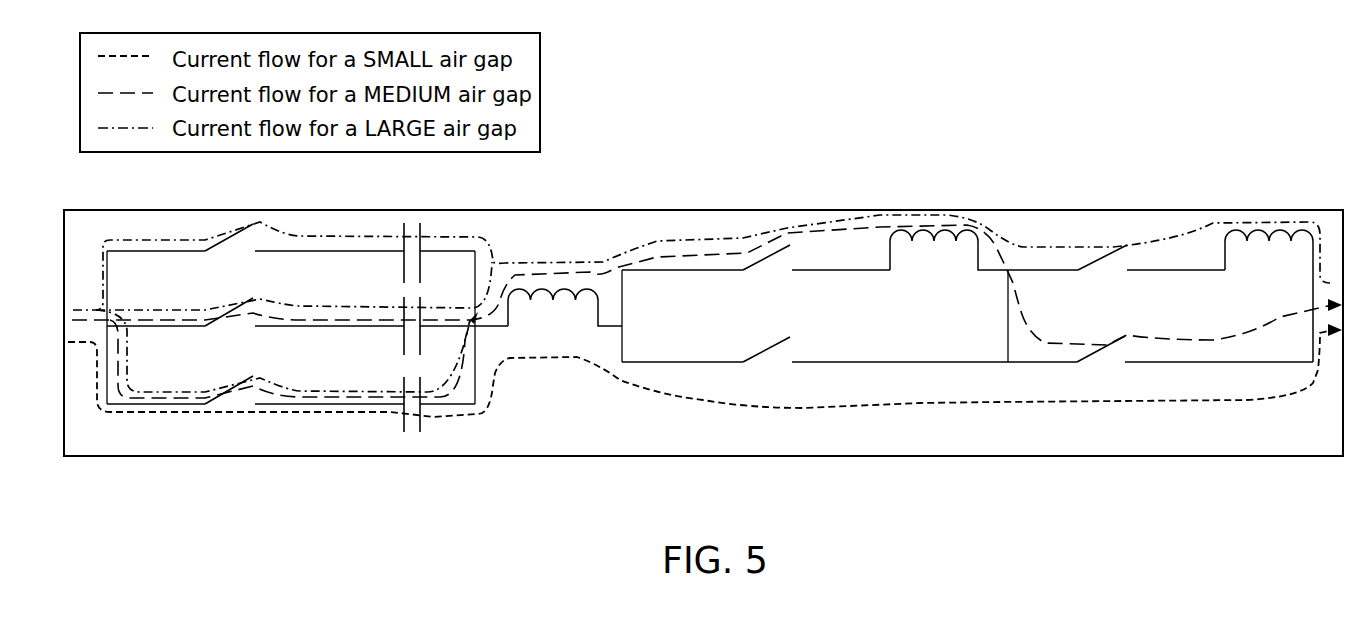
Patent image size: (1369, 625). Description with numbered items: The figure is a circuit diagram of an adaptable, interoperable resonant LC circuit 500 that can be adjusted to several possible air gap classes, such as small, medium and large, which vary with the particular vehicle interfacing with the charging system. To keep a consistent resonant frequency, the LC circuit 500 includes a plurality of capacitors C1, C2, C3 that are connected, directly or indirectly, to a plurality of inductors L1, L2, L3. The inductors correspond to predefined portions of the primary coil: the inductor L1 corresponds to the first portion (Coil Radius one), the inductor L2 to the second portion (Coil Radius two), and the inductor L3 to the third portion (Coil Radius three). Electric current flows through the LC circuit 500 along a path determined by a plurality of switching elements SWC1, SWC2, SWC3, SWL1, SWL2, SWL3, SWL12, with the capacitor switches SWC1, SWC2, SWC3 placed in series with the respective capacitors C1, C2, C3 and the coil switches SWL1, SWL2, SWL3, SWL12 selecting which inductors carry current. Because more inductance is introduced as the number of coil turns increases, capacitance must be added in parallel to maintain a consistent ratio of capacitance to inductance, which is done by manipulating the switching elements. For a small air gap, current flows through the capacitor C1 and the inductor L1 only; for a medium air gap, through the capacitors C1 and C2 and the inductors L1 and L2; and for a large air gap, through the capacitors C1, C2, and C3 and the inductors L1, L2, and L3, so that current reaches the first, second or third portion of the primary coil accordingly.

The resonant LC circuit 500 is at (1081, 158).
The switching element SWC1 is at (255, 409).
The switching element SWC2 is at (255, 327).
The switching element SWC3 is at (255, 258).
The capacitor C1 is at (424, 410).
The capacitor C2 is at (440, 328).
The capacitor C3 is at (424, 260).
The inductor L1 is at (552, 322).
The inductor L2 is at (941, 265).
The inductor L3 is at (1255, 296).
The switching element SWL1 is at (849, 364).
The switching element SWL2 is at (756, 283).
The switching element SWL3 is at (1116, 283).
The switching element SWL12 is at (1175, 364).